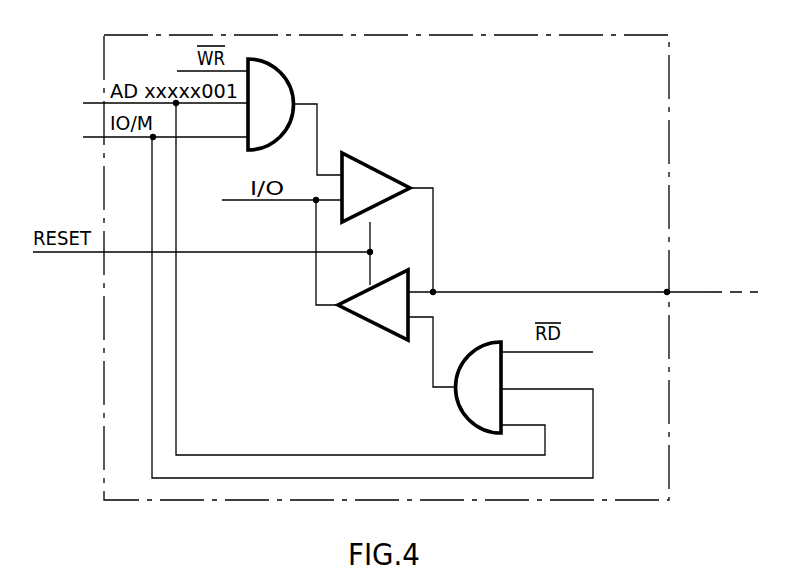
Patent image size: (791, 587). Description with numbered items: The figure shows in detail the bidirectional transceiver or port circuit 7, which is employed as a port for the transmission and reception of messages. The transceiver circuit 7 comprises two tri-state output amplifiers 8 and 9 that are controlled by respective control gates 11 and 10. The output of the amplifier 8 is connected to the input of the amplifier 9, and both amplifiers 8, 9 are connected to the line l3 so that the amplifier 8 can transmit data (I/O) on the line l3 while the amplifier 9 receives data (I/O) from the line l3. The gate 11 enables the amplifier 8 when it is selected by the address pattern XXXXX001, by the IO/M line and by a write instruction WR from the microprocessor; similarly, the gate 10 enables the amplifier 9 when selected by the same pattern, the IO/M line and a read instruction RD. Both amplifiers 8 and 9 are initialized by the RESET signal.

The bidirectional transceiver or port circuit 7 is at (671, 41).
The tri-state output amplifier 8 is at (363, 163).
The tri-state output amplifier 9 is at (372, 325).
The control gate 10 is at (470, 422).
The control gate 11 is at (286, 73).
The line l3 is at (668, 291).